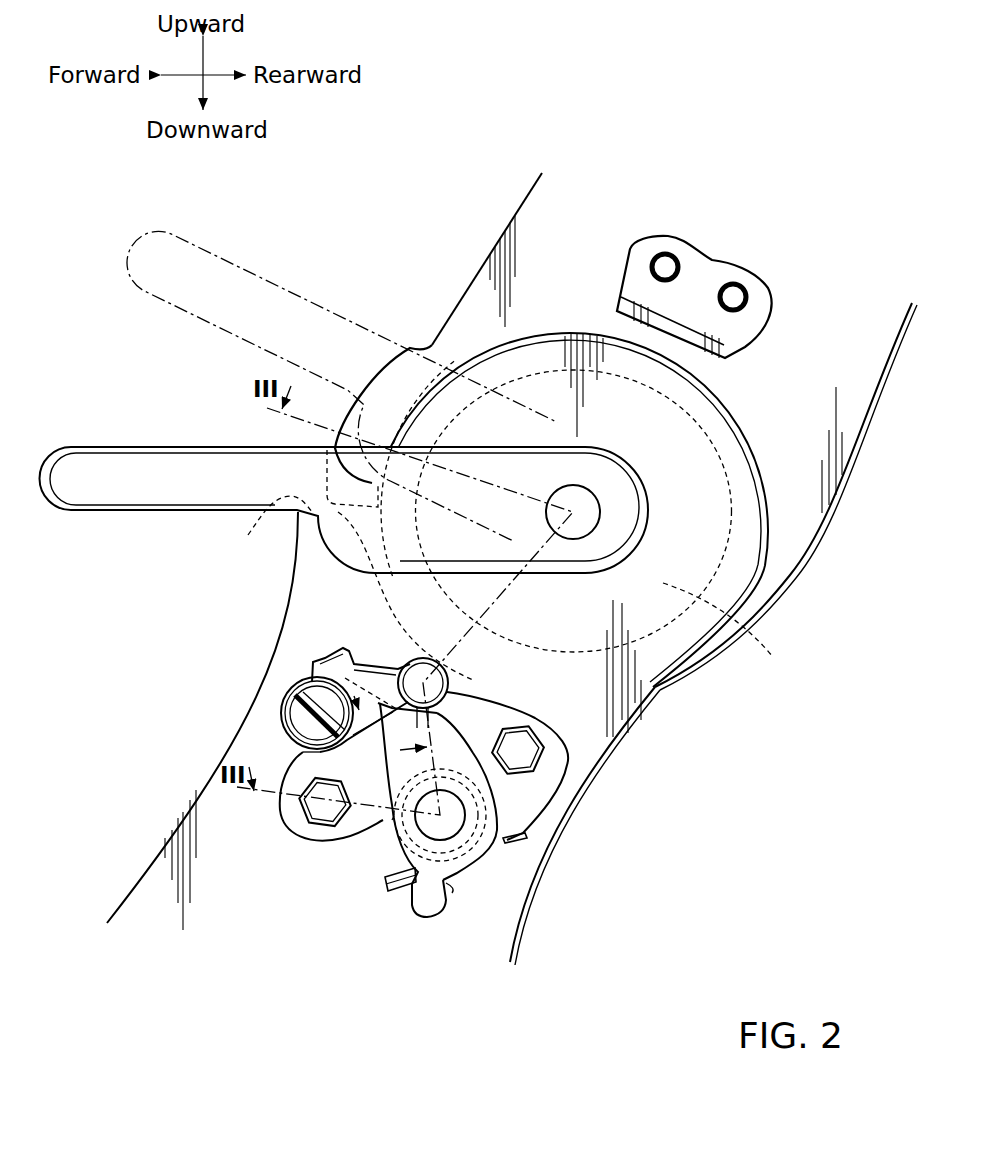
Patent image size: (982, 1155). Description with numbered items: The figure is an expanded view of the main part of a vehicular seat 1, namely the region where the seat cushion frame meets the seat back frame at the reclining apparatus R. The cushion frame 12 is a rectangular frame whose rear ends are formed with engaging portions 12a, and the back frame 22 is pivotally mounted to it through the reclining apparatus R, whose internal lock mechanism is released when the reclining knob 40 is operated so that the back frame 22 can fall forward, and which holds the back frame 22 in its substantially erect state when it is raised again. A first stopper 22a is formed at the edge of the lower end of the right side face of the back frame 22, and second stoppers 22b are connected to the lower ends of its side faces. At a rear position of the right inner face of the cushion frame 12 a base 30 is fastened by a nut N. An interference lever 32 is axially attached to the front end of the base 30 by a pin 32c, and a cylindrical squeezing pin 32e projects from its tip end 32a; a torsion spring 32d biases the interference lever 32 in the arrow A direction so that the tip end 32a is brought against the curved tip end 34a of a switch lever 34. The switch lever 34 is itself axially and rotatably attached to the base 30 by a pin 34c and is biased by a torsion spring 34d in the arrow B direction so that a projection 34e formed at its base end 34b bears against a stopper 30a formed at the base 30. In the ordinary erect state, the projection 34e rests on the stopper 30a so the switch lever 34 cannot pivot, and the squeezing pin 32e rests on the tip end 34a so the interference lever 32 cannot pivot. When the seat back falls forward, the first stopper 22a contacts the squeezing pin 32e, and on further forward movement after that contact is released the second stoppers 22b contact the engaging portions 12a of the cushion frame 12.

The vehicular seat 1 is at (121, 330).
The cushion frame 12 is at (165, 885).
The engaging portion 12a is at (261, 530).
The back frame 22 is at (540, 212).
The first stopper 22a is at (392, 383).
The second stopper 22b is at (703, 273).
The base 30 is at (535, 787).
The stopper 30a is at (390, 892).
The interference lever 32 is at (298, 675).
The tip end 32a is at (446, 670).
The pin 32c is at (280, 722).
The torsion spring 32d is at (307, 753).
The squeezing pin 32e is at (414, 670).
The switch lever 34 is at (505, 857).
The tip end 34a is at (382, 696).
The base end 34b is at (453, 860).
The pin 34c is at (445, 814).
The torsion spring 34d is at (392, 820).
The projection 34e is at (433, 913).
The reclining knob 40 is at (172, 472).
The nut N is at (310, 812).
The arrow mark A direction A is at (367, 712).
The arrow mark B direction B is at (424, 748).
The reclining apparatus R is at (727, 628).